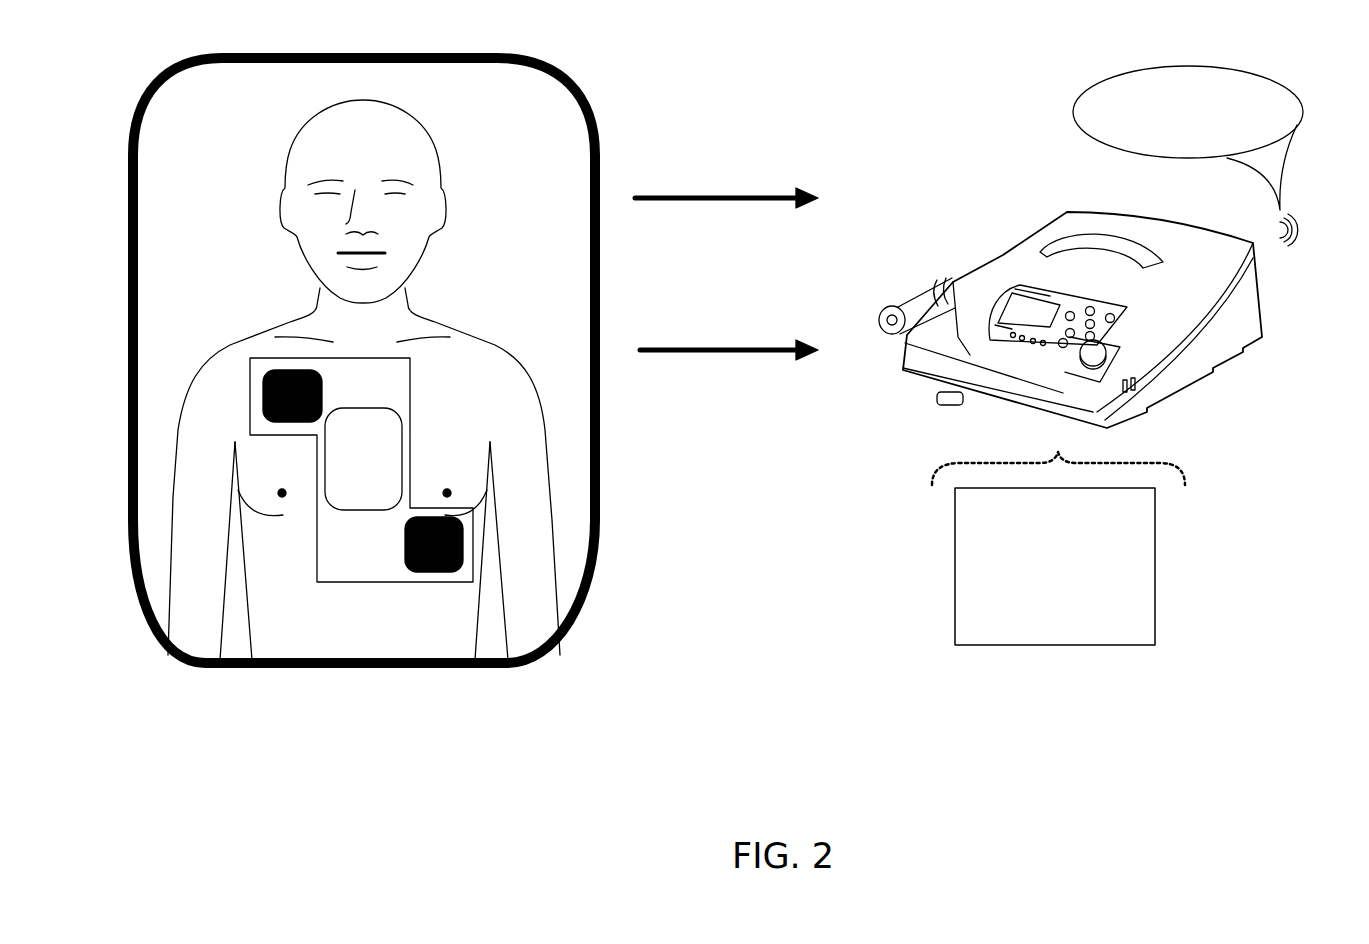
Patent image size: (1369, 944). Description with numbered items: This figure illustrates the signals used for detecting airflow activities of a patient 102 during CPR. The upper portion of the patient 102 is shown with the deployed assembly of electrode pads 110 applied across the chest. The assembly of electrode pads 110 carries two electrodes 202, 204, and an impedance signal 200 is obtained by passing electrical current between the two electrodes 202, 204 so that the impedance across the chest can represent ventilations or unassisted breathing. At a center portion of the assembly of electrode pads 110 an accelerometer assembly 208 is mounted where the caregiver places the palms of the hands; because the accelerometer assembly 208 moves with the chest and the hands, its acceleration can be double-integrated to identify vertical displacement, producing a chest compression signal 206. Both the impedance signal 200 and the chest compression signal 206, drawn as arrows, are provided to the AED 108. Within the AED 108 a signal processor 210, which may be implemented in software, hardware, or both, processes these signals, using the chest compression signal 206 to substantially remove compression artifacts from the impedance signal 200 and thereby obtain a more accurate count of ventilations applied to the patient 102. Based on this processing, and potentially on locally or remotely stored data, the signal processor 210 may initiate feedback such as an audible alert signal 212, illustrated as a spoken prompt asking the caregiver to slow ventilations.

The patient 102 is at (435, 155).
The assembly of electrode pads 110 is at (410, 422).
The electrode 202 is at (322, 398).
The electrode 204 is at (405, 531).
The accelerometer assembly 208 is at (363, 459).
The impedance signal 200 is at (713, 198).
The chest compression signal 206 is at (713, 350).
The AED 108 is at (1010, 243).
The audible alert signal 212 is at (1287, 247).
The signal processor 210 is at (1058, 548).